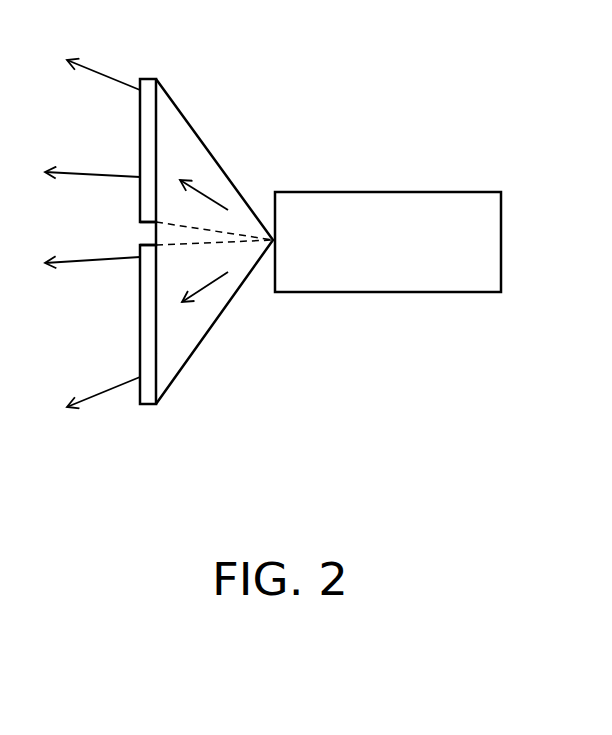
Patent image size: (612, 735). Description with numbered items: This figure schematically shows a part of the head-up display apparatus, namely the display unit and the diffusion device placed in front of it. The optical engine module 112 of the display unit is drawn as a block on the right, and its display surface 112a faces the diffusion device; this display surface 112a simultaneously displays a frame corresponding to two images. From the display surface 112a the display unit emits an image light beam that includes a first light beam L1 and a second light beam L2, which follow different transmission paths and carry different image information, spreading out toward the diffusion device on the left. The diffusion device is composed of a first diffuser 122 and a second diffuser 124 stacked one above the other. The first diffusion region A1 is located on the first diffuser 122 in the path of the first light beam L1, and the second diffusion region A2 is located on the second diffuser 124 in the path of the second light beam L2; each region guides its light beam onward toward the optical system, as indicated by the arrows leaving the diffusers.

The optical engine module 112 is at (463, 192).
The display surface 112a is at (272, 207).
The first diffuser 122 is at (147, 78).
The second diffuser 124 is at (148, 405).
The first light beam L1 is at (210, 197).
The second light beam L2 is at (210, 287).
The first diffusion region A1 is at (158, 130).
The second diffusion region A2 is at (157, 353).